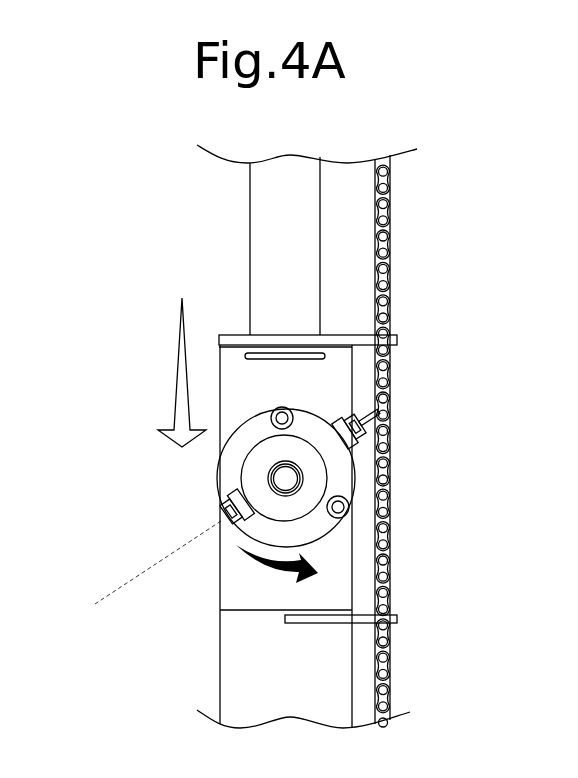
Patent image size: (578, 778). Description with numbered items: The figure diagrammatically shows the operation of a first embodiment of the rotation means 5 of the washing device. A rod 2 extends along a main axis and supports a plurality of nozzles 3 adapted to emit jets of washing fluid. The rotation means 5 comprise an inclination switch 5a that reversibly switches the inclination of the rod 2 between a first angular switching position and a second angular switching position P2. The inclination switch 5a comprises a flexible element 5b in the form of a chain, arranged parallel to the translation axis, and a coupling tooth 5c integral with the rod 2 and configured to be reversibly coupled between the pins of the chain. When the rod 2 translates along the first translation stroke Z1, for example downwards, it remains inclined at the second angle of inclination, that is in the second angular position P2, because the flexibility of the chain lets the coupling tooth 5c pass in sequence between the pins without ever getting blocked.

The rod 2 is at (250, 384).
The nozzles 3 is at (229, 494).
The rotation means 5 is at (410, 544).
The inclination switch 5a is at (421, 489).
The flexible element 5b is at (387, 388).
The coupling tooth 5c is at (390, 422).
The first translation stroke Z1 is at (177, 372).
The second angular switching position P2 is at (203, 532).